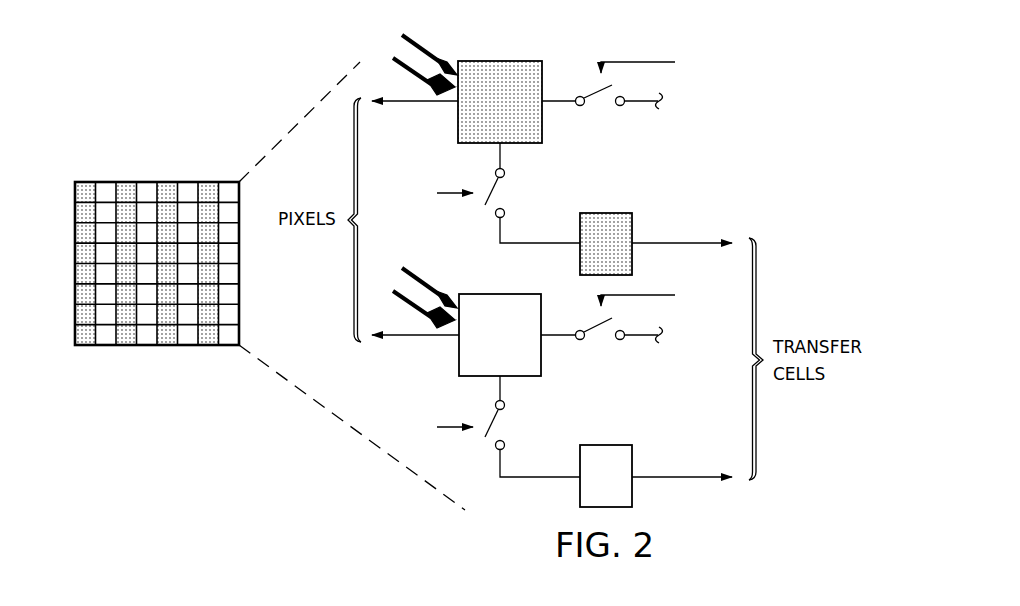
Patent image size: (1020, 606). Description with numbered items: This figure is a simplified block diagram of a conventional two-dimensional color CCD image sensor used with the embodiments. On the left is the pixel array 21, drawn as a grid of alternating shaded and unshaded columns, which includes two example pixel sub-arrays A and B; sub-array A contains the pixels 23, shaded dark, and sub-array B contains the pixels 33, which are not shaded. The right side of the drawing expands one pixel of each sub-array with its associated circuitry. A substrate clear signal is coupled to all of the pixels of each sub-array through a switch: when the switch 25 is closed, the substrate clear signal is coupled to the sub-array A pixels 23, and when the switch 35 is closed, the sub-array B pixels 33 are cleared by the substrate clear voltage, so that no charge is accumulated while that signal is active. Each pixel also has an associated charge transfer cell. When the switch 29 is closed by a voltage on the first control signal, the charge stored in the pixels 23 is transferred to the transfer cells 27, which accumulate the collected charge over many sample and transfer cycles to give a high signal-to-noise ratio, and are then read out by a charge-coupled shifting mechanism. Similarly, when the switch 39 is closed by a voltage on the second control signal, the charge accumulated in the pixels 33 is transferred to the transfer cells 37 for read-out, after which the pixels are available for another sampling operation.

The pixel array 21 is at (101, 351).
The pixel sub-array A is at (209, 351).
The pixel sub-array B is at (147, 351).
The pixels 23 is at (488, 61).
The switch 25 is at (594, 105).
The transfer cells 27 is at (606, 213).
The switch 29 is at (505, 186).
The pixels 33 is at (488, 294).
The switch 35 is at (594, 338).
The transfer cells 37 is at (606, 445).
The switch 39 is at (505, 418).